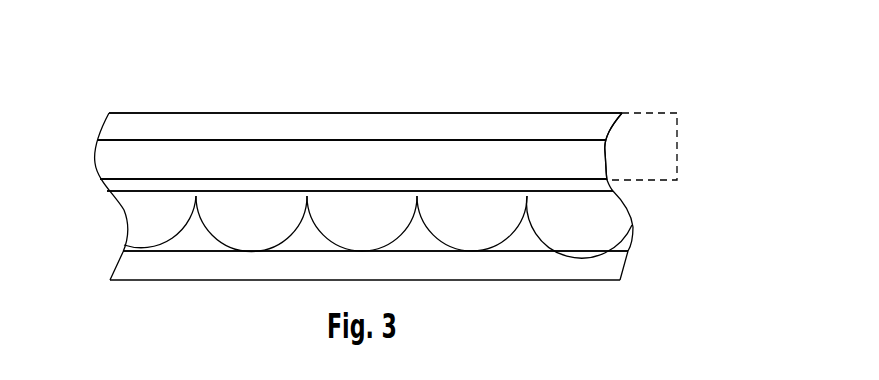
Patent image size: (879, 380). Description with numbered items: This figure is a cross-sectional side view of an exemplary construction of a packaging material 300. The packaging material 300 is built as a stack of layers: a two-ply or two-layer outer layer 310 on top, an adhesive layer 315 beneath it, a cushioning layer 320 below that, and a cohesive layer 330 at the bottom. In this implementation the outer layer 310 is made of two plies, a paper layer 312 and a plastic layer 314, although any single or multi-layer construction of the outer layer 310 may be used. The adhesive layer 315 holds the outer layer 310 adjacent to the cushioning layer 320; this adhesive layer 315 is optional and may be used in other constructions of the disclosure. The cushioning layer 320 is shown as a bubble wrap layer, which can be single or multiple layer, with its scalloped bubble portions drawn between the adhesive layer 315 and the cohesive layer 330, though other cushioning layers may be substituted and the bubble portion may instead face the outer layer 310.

The packaging material 300 is at (658, 50).
The outer layer 310 is at (677, 113).
The paper layer 312 is at (552, 123).
The plastic layer 314 is at (453, 150).
The adhesive layer 315 is at (608, 181).
The cushioning layer 320 is at (132, 212).
The cohesive layer 330 is at (222, 268).